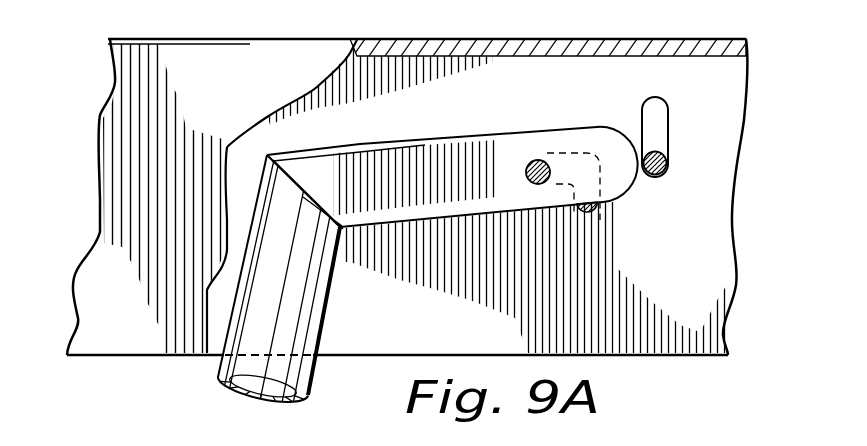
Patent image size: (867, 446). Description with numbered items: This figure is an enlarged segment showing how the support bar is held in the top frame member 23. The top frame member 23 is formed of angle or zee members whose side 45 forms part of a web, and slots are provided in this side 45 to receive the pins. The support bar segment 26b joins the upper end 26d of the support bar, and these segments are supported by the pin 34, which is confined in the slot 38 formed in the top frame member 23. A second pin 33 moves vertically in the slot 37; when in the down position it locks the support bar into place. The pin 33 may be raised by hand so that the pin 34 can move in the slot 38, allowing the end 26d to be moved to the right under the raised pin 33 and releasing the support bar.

The top frame member 23 is at (76, 170).
The upper end of support bar 26d is at (541, 131).
The support bar segment 26b is at (325, 302).
The pin 34 is at (527, 167).
The slot 38 is at (578, 214).
The slot 37 is at (668, 130).
The pin 33 is at (664, 175).
The side of top frame member 45 is at (699, 284).